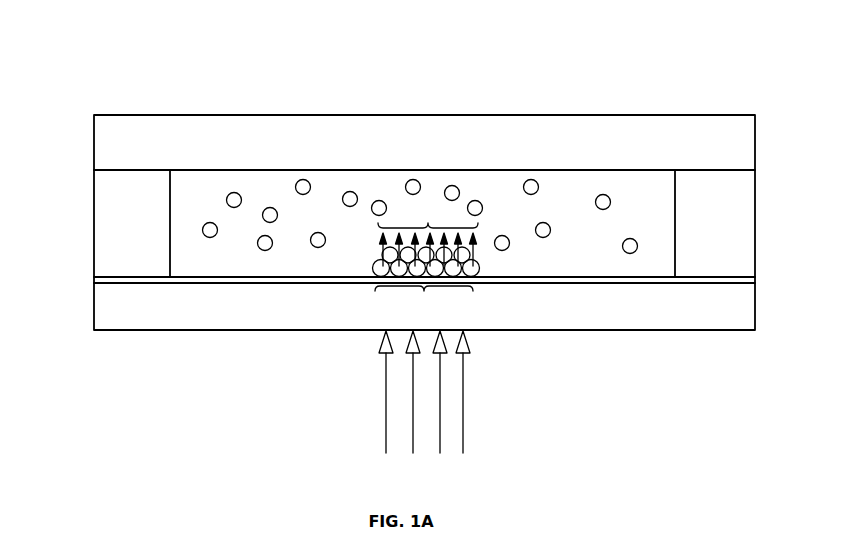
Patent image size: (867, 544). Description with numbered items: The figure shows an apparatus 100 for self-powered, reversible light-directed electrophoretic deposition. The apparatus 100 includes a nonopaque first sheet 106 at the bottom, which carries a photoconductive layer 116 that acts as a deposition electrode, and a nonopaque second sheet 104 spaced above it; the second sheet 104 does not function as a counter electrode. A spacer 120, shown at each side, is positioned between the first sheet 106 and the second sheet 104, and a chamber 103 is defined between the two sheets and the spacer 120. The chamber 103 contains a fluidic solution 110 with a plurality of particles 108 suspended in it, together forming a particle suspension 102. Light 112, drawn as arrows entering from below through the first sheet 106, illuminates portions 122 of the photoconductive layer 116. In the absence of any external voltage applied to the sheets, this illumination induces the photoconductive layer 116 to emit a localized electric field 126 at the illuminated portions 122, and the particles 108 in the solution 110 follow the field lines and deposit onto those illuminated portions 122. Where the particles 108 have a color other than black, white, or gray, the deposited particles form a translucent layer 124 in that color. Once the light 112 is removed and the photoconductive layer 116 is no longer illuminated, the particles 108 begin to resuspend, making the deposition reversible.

The apparatus 100 is at (105, 45).
The particle suspension 102 is at (189, 266).
The chamber 103 is at (675, 192).
The second sheet 104 is at (154, 154).
The first sheet 106 is at (160, 308).
The particles 108 is at (227, 199).
The fluidic solution 110 is at (183, 217).
The light 112 is at (424, 406).
The photoconductive layer 116 is at (557, 278).
The spacer 120 is at (115, 260).
The illuminated portions 122 is at (407, 312).
The translucent layer 124 is at (376, 255).
The electric field 126 is at (412, 224).